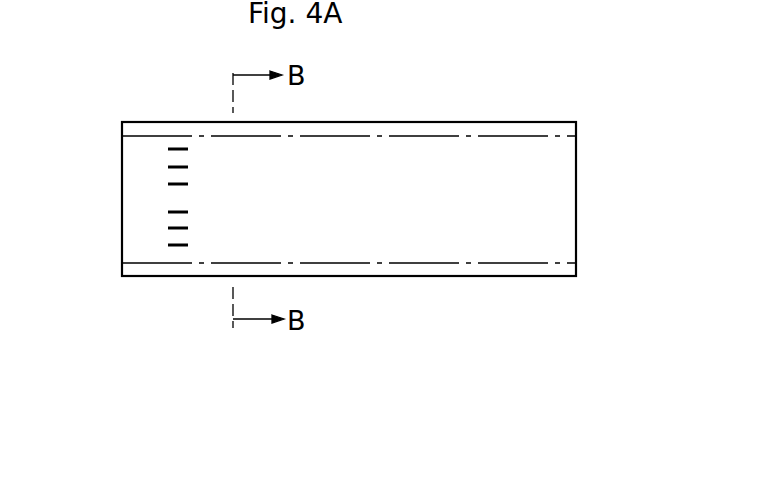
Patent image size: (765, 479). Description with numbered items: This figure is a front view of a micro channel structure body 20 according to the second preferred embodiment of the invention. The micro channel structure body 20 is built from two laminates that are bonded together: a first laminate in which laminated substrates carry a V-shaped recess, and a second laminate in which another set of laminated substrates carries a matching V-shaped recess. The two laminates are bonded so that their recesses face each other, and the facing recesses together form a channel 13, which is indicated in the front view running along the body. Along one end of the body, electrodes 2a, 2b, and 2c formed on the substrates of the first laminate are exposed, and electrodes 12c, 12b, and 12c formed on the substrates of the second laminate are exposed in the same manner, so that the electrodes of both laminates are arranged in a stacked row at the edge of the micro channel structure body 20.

The micro channel structure body 20 is at (650, 210).
The channel 13 is at (413, 263).
The electrode 2a is at (176, 149).
The electrode 2b is at (176, 167).
The electrode 2c is at (176, 184).
The electrode 12c is at (176, 212).
The electrode 12b is at (176, 228).